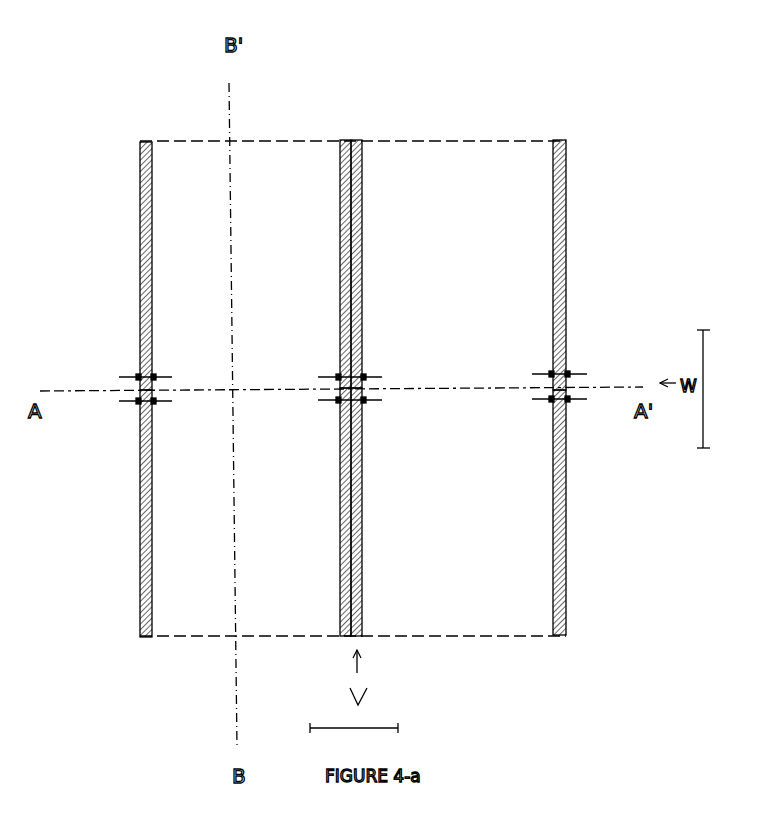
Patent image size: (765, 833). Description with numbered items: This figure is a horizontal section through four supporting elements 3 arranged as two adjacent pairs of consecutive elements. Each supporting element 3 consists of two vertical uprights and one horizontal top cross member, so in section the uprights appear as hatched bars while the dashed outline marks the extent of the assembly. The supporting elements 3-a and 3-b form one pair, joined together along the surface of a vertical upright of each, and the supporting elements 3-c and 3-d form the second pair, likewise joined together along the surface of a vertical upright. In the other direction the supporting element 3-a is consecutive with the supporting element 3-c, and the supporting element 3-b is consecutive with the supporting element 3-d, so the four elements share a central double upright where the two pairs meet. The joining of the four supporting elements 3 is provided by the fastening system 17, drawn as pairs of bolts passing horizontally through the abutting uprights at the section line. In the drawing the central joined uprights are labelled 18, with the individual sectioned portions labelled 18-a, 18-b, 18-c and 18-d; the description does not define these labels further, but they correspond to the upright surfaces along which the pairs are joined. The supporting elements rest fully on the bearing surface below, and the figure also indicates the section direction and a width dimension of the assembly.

The supporting element 3 is at (290, 244).
The supporting element 3-a is at (185, 531).
The supporting element 3-b is at (526, 517).
The supporting element 3-c is at (192, 258).
The supporting element 3-d is at (508, 232).
The fastening system 17 is at (137, 373).
The central partition wall 18 is at (418, 433).
The partition wall portion a 18-a is at (339, 574).
The partition wall portion b 18-b is at (365, 557).
The partition wall portion c 18-c is at (339, 289).
The partition wall portion d 18-d is at (365, 289).